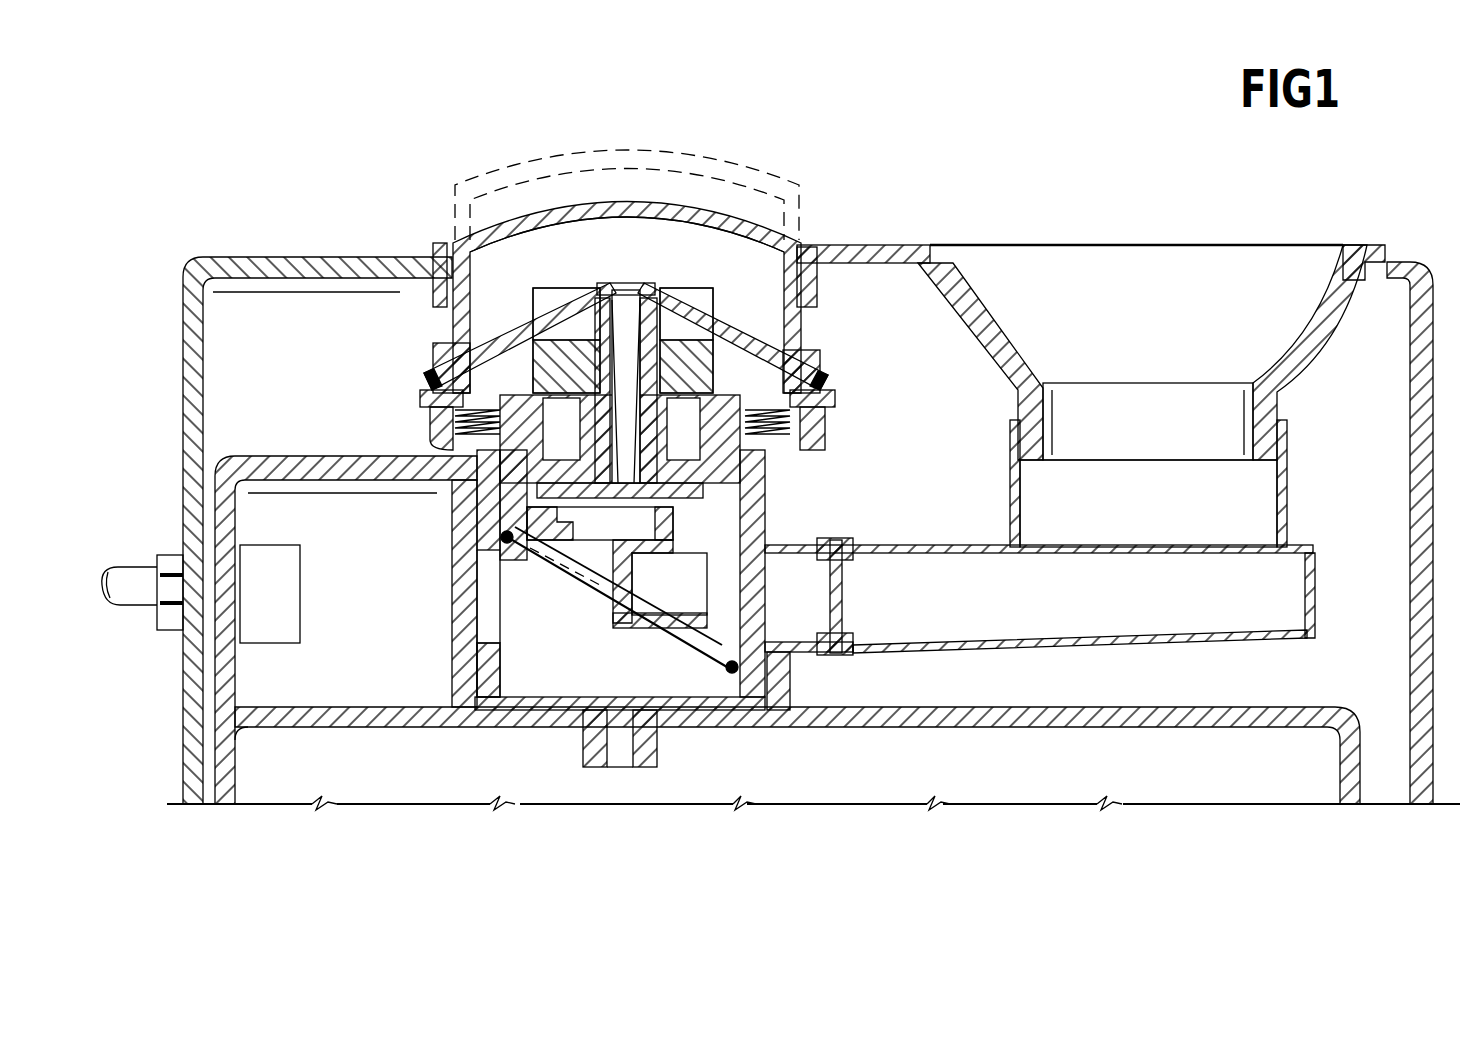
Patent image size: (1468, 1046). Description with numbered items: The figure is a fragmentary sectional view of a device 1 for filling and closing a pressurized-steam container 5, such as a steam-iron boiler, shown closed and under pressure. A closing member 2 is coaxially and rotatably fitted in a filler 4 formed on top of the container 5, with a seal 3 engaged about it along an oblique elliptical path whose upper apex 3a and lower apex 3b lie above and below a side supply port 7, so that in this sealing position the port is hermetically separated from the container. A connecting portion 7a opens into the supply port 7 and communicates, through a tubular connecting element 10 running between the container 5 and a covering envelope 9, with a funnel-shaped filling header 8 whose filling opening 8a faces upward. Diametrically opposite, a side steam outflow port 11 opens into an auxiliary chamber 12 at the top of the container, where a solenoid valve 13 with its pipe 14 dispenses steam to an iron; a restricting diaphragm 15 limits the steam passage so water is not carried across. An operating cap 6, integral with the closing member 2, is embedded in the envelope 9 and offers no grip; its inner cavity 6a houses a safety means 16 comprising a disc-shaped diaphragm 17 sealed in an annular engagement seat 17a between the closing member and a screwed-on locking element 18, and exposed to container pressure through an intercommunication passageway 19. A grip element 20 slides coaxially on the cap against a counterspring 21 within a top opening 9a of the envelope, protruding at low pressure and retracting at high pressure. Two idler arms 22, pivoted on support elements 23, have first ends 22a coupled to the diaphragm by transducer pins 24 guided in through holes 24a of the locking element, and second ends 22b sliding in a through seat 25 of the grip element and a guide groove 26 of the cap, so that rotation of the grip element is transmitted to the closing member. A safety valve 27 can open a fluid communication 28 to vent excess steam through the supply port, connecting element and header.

The device for filling and closing pressurized-steam containers 1 is at (978, 116).
The closing member 2 is at (745, 525).
The seal 3 is at (595, 620).
The upper apex 3a is at (465, 605).
The lower apex 3b is at (740, 668).
The filler 4 is at (512, 678).
The pressurized-steam container 5 is at (1158, 763).
The operating cap 6 is at (433, 430).
The inner cavity 6a is at (430, 412).
The side supply port 7 is at (803, 597).
The connecting portion 7a is at (855, 640).
The filling header 8 is at (1010, 262).
The filling opening 8a is at (1100, 270).
The covering envelope 9 is at (258, 257).
The top opening 9a is at (458, 190).
The tubular connecting element 10 is at (997, 607).
The side steam outflow port 11 is at (488, 615).
The auxiliary chamber 12 is at (275, 675).
The solenoid valve 13 is at (282, 616).
The pipe 14 is at (130, 583).
The restricting diaphragm 15 is at (750, 640).
The safety means 16 is at (810, 320).
The disc-shaped diaphragm 17 is at (700, 522).
The annular engagement seat 17a is at (520, 477).
The locking element 18 is at (740, 470).
The intercommunication passageway 19 is at (597, 523).
The grip element 20 is at (690, 300).
The counterspring 21 is at (443, 315).
The idler arms 22 is at (428, 250).
The first end 22a is at (600, 282).
The second end 22b is at (827, 383).
The support element 23 is at (547, 300).
The transducer pin 24 is at (760, 290).
The through hole 24a is at (625, 280).
The through seat 25 is at (810, 370).
The guide groove 26 is at (357, 258).
The safety valve 27 is at (713, 673).
The fluid communication 28 is at (667, 587).